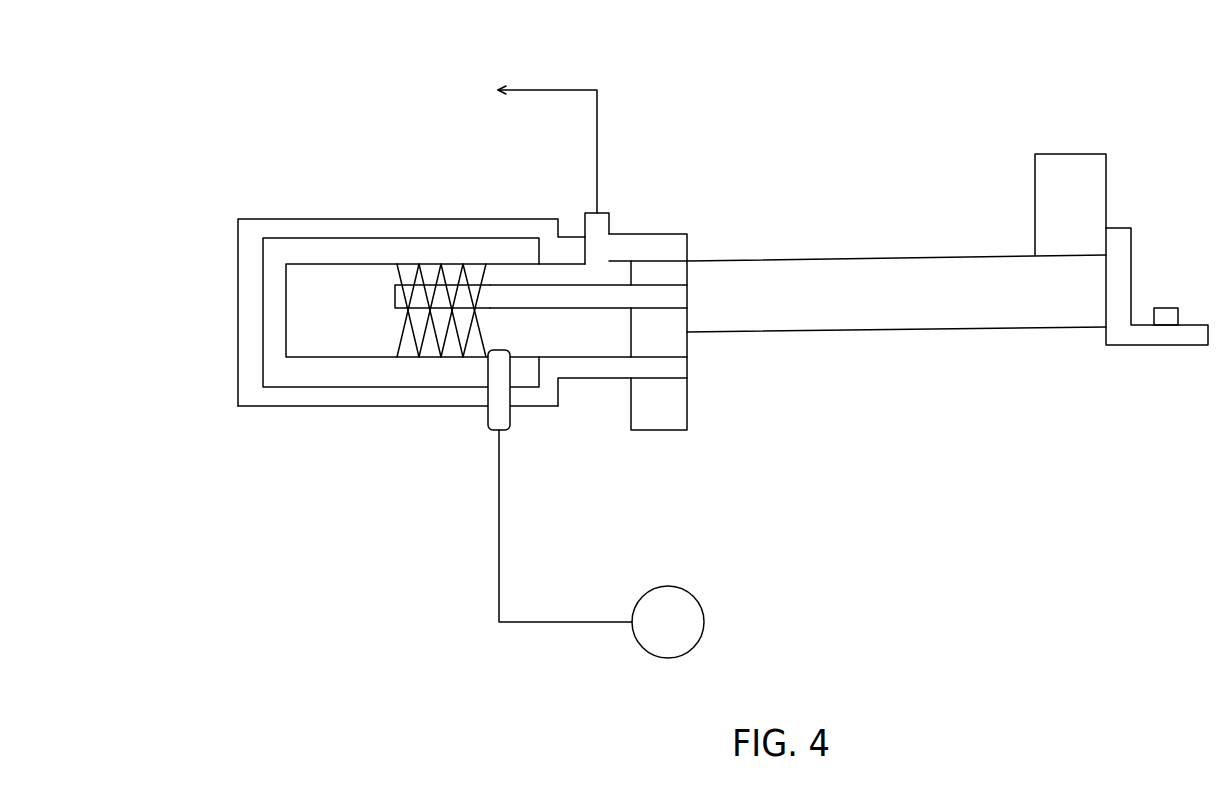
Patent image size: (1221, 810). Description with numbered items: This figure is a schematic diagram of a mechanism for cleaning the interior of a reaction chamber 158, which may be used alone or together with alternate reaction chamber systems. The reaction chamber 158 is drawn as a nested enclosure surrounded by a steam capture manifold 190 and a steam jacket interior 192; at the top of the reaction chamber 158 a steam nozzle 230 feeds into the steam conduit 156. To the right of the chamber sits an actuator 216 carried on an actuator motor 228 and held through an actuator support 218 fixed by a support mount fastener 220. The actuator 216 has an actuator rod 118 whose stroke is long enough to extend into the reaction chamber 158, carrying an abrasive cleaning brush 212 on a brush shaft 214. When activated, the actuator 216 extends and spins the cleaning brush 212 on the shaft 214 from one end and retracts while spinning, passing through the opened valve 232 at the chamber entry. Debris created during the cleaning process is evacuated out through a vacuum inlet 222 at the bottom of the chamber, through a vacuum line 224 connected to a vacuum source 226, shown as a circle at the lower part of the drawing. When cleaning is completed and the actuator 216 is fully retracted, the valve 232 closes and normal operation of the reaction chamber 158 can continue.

The actuator rod 118 is at (560, 308).
The steam conduit 156 is at (560, 90).
The reaction chamber 158 is at (294, 238).
The steam capture manifold 190 is at (247, 325).
The steam jacket interior 192 is at (323, 409).
The cleaning brush 212 is at (405, 342).
The brush shaft to actuator 214 is at (395, 298).
The actuator 216 is at (873, 258).
The actuator support 218 is at (1148, 347).
The support mount fastener 220 is at (1166, 308).
The vacuum inlet 222 is at (503, 430).
The vacuum line 224 is at (499, 572).
The vacuum source 226 is at (705, 621).
The actuator motor 228 is at (1070, 154).
The steam nozzle 230 is at (612, 215).
The valve for brush to enter 232 is at (657, 432).